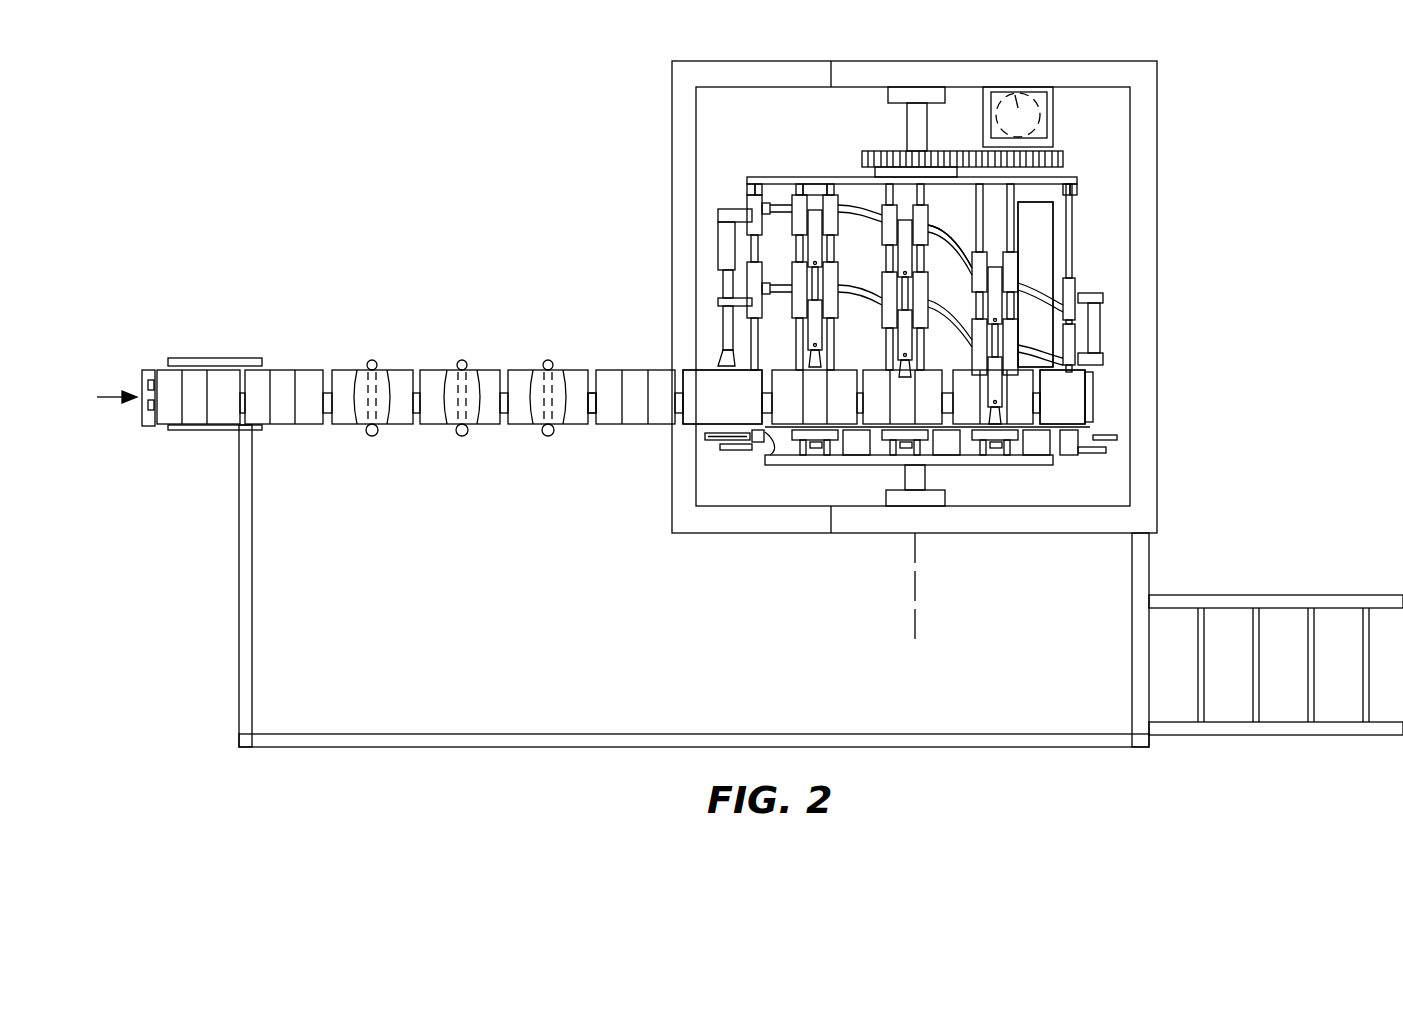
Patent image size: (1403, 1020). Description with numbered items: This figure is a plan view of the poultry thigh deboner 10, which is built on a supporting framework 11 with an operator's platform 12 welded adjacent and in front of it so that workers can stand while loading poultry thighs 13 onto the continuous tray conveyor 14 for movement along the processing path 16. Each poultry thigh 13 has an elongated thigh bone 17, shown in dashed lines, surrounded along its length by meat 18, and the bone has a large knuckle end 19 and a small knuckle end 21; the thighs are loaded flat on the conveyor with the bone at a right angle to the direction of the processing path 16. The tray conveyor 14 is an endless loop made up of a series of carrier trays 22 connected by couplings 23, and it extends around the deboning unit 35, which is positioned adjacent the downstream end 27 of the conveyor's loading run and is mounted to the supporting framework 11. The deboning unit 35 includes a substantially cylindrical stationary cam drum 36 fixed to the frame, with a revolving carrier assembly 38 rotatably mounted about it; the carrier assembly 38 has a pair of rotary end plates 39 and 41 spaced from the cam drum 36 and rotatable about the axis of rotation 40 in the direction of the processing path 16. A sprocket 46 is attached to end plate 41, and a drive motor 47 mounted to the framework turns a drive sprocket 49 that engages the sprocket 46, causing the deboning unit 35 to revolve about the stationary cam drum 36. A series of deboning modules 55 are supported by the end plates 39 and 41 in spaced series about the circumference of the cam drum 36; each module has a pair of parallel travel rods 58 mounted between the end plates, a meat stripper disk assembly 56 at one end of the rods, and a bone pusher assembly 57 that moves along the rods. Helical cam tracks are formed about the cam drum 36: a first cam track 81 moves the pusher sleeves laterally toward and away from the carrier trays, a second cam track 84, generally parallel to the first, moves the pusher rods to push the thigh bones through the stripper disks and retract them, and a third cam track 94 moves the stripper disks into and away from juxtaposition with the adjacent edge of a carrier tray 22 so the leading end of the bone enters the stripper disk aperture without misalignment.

The poultry thigh deboner 10 is at (1195, 158).
The supporting framework 11 is at (850, 72).
The operator's platform 12 is at (392, 738).
The poultry thigh 13 is at (374, 367).
The tray conveyor 14 is at (428, 425).
The processing path 16 is at (118, 395).
The thigh bone 17 is at (545, 437).
The meat 18 is at (558, 385).
The large knuckle end 19 is at (462, 360).
The small knuckle end 21 is at (374, 437).
The carrier tray 22 is at (692, 420).
The coupling 23 is at (593, 410).
The downstream end 27 is at (1042, 412).
The deboning unit 35 is at (1104, 251).
The cam drum 36 is at (1037, 224).
The carrier assembly 38 is at (908, 274).
The rotary end plate 39 is at (1048, 182).
The axis of rotation 40 is at (917, 622).
The rotary end plate 41 is at (852, 182).
The sprocket 46 is at (883, 152).
The drive motor 47 is at (1018, 92).
The drive sprocket 49 is at (1053, 148).
The deboning module 55 is at (718, 248).
The meat stripper disk assembly 56 is at (728, 448).
The bone pusher assembly 57 is at (718, 328).
The travel rods 58 is at (922, 258).
The first cam track 81 is at (955, 308).
The second cam track 84 is at (855, 228).
The third cam track 94 is at (948, 457).